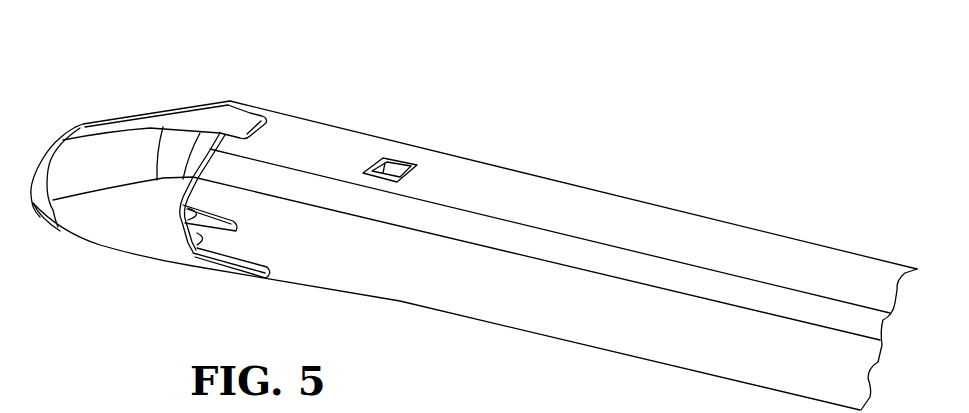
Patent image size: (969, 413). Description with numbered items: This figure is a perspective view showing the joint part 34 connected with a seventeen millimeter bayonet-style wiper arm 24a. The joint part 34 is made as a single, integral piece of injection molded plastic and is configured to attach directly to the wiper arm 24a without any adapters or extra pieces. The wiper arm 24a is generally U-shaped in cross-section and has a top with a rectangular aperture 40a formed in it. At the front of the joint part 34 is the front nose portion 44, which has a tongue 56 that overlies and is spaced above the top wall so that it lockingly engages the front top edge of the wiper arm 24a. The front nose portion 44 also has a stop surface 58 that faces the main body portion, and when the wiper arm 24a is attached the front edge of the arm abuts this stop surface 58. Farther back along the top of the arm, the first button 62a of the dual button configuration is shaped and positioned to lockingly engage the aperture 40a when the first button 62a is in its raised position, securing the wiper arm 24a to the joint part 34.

The 17 mm wiper arm 24a is at (480, 278).
The joint part 34 is at (78, 78).
The front nose portion 44 is at (137, 108).
The tongue 56 is at (249, 124).
The stop surface 58 is at (203, 240).
The rectangular aperture 40a is at (400, 152).
The first button 62a is at (389, 157).